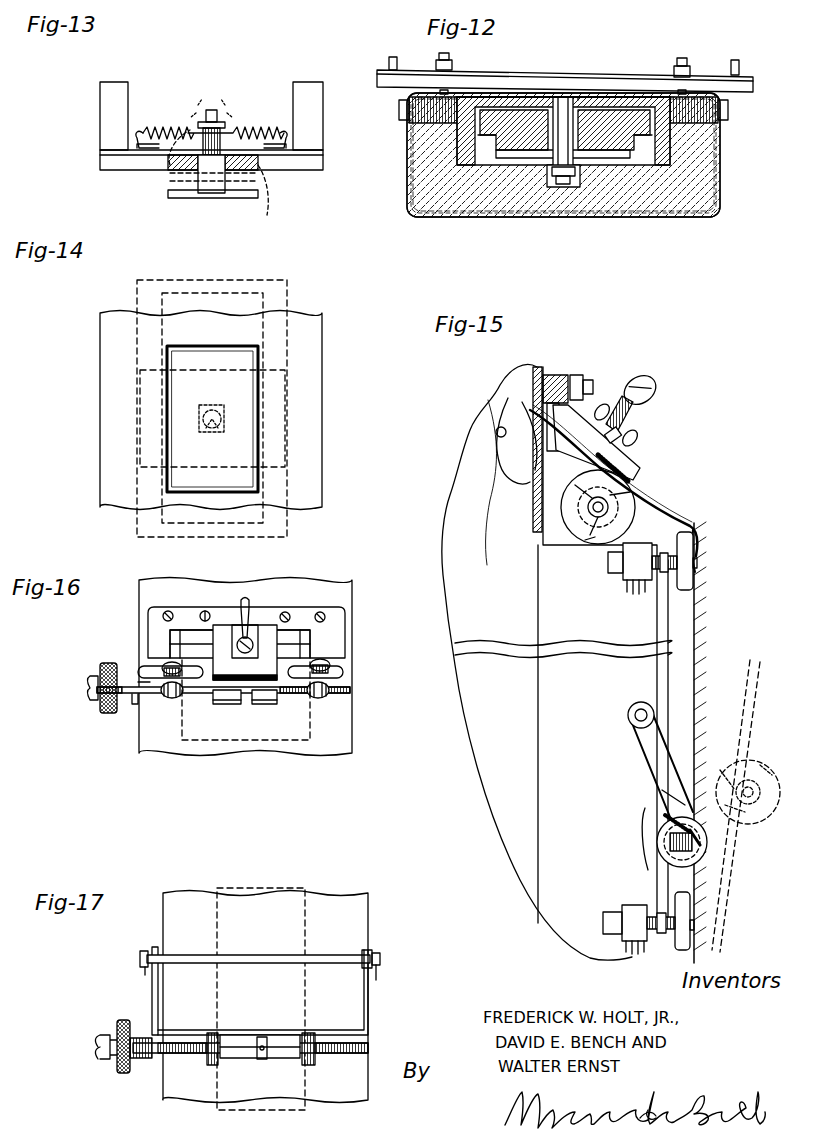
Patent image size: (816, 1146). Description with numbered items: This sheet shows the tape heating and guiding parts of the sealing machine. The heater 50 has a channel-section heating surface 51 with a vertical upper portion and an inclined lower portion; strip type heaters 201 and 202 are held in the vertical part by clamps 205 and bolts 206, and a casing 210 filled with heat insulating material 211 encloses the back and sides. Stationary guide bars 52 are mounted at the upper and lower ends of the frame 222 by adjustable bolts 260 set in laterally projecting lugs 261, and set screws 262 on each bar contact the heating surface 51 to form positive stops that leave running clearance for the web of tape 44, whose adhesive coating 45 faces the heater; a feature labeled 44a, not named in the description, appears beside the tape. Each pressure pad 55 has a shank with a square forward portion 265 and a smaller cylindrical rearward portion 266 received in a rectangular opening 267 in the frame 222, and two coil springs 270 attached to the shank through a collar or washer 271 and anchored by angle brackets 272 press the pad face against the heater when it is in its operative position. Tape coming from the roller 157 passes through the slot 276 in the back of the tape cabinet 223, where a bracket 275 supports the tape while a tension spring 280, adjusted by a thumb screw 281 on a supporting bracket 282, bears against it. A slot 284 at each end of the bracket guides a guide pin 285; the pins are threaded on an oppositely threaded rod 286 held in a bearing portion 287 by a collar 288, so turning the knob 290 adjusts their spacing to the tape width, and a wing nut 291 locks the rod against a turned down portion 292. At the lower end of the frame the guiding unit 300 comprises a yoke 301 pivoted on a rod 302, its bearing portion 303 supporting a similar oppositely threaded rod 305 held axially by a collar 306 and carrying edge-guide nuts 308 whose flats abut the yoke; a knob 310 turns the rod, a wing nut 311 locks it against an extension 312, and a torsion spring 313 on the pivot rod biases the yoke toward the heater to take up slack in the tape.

In FIG. 14, the web of tape 44 is at (268, 296).
In FIG. 17, the web of tape 44 is at (242, 888).
In FIG. 15, the web of tape 44 is at (745, 720).
In FIG. 14, the cable sheath 44a is at (290, 300).
In FIG. 15, the adhesive coating 45 is at (697, 527).
In FIG. 12, the heater 50 is at (400, 191).
In FIG. 12, the heating surface 51 is at (604, 100).
In FIG. 15, the heating surface 51 is at (700, 672).
In FIG. 12, the stationary guide bars 52 is at (560, 77).
In FIG. 15, the stationary guide bars 52 is at (673, 945).
In FIG. 13, the pressure pads 55 is at (240, 198).
In FIG. 14, the pressure pads 55 is at (148, 386).
In FIG. 15, the roller 157 is at (503, 410).
In FIG. 12, the strip type heater 201 is at (512, 150).
In FIG. 12, the strip type heater 202 is at (618, 122).
In FIG. 12, the clamps 205 is at (592, 152).
In FIG. 12, the bolts 206 is at (562, 185).
In FIG. 12, the casing 210 is at (432, 217).
In FIG. 12, the heat insulating material 211 is at (700, 195).
In FIG. 13, the frame 222 is at (106, 163).
In FIG. 17, the frame 222 is at (345, 893).
In FIG. 15, the tape cabinet 223 is at (455, 512).
In FIG. 12, the adjustable bolts 260 is at (735, 60).
In FIG. 15, the adjustable bolts 260 is at (640, 905).
In FIG. 15, the laterally projecting lugs 261 is at (630, 915).
In FIG. 12, the set screws 262 is at (681, 58).
In FIG. 15, the set screws 262 is at (696, 928).
In FIG. 13, the square forward portion 265 is at (211, 190).
In FIG. 14, the square forward portion 265 is at (198, 410).
In FIG. 13, the cylindrical rearward portion 266 is at (222, 142).
In FIG. 14, the cylindrical rearward portion 266 is at (203, 419).
In FIG. 13, the rectangular opening 267 is at (182, 172).
In FIG. 14, the rectangular opening 267 is at (203, 424).
In FIG. 13, the coil springs 270 is at (270, 124).
In FIG. 13, the collar or washer 271 is at (208, 110).
In FIG. 13, the angle brackets 272 is at (285, 146).
In FIG. 12, the angle brackets 272 is at (563, 110).
In FIG. 16, the bracket 275 is at (320, 615).
In FIG. 15, the bracket 275 is at (563, 378).
In FIG. 16, the slot 276 is at (300, 642).
In FIG. 15, the slot 276 is at (552, 420).
In FIG. 16, the tension spring 280 is at (228, 635).
In FIG. 15, the tension spring 280 is at (622, 482).
In FIG. 16, the thumb screw 281 is at (248, 600).
In FIG. 15, the thumb screw 281 is at (656, 392).
In FIG. 16, the supporting bracket 282 is at (280, 612).
In FIG. 15, the supporting bracket 282 is at (582, 412).
In FIG. 16, the slot 284 is at (300, 698).
In FIG. 16, the guide pins 285 is at (330, 667).
In FIG. 16, the threaded rod 286 is at (338, 692).
In FIG. 16, the bearing portion 287 is at (225, 704).
In FIG. 16, the collar 288 is at (248, 704).
In FIG. 16, the knob 290 is at (107, 715).
In FIG. 16, the wing nut 291 is at (92, 700).
In FIG. 16, the turned down portion 292 is at (138, 700).
In FIG. 17, the guiding unit 300 is at (133, 1003).
In FIG. 15, the guiding unit 300 is at (624, 756).
In FIG. 17, the yoke 301 is at (342, 1032).
In FIG. 15, the yoke 301 is at (650, 777).
In FIG. 17, the rod 302 is at (335, 960).
In FIG. 15, the rod 302 is at (628, 713).
In FIG. 17, the bearing portion 303 is at (278, 1035).
In FIG. 17, the rod 305 is at (370, 1049).
In FIG. 15, the rod 305 is at (665, 843).
In FIG. 17, the collar 306 is at (262, 1060).
In FIG. 15, the collar 306 is at (702, 846).
In FIG. 17, the nuts 308 is at (312, 1067).
In FIG. 15, the nuts 308 is at (692, 855).
In FIG. 17, the knob 310 is at (120, 1072).
In FIG. 17, the wing nut 311 is at (98, 1062).
In FIG. 17, the extension 312 is at (152, 1060).
In FIG. 17, the torsion spring 313 is at (380, 972).